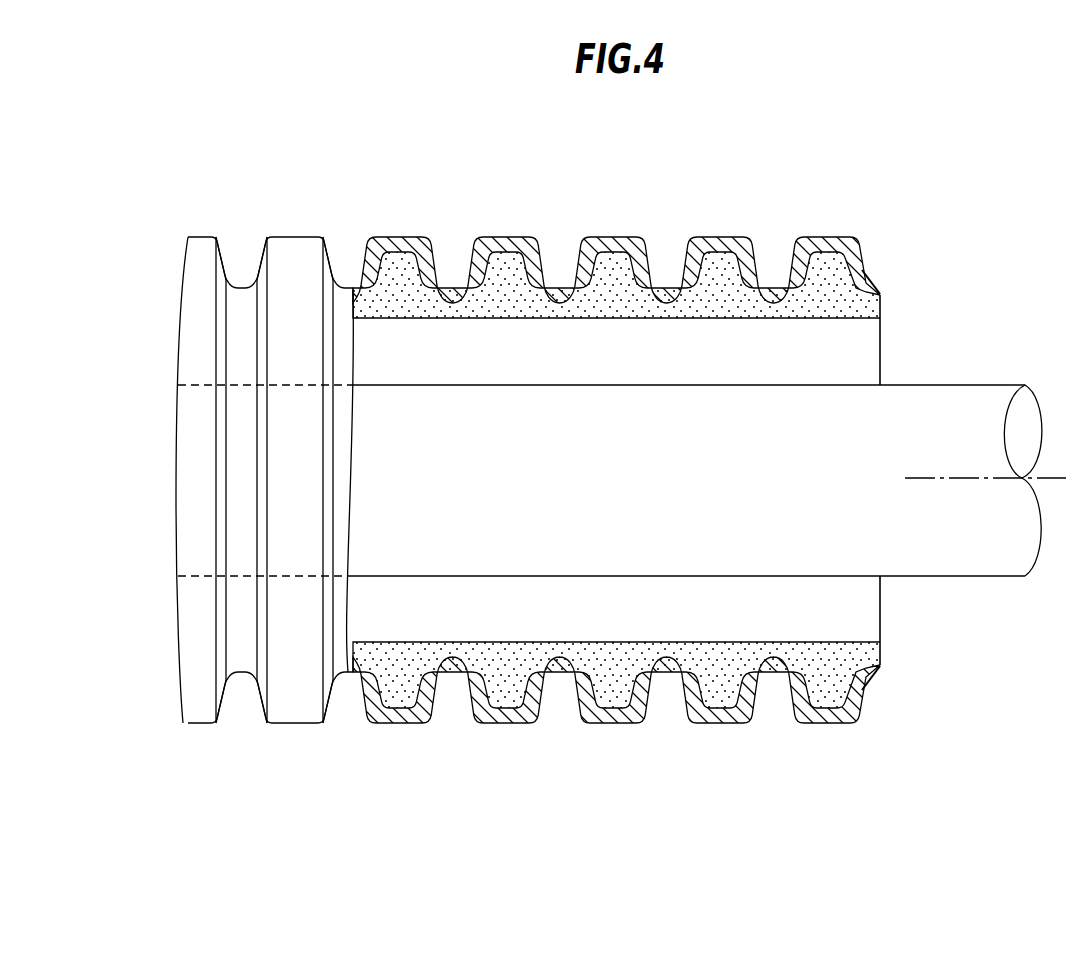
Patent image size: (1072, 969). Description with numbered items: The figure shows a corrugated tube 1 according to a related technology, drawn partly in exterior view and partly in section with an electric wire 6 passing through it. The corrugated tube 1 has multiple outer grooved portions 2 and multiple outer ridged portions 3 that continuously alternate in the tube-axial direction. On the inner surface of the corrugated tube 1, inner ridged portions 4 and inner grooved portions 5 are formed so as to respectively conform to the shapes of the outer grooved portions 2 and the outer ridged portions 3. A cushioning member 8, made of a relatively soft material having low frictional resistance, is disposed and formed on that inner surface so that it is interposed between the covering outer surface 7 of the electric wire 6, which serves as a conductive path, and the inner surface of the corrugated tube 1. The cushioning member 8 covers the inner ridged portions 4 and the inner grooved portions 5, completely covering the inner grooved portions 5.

The corrugated tube 1 is at (296, 234).
The outer grooved portion 2 is at (775, 266).
The outer ridged portion 3 is at (831, 237).
The inner ridged portion 4 is at (777, 320).
The inner grooved portion 5 is at (863, 276).
The electric wire 6 is at (977, 552).
The covering outer surface 7 is at (915, 405).
The cushioning member 8 is at (612, 320).